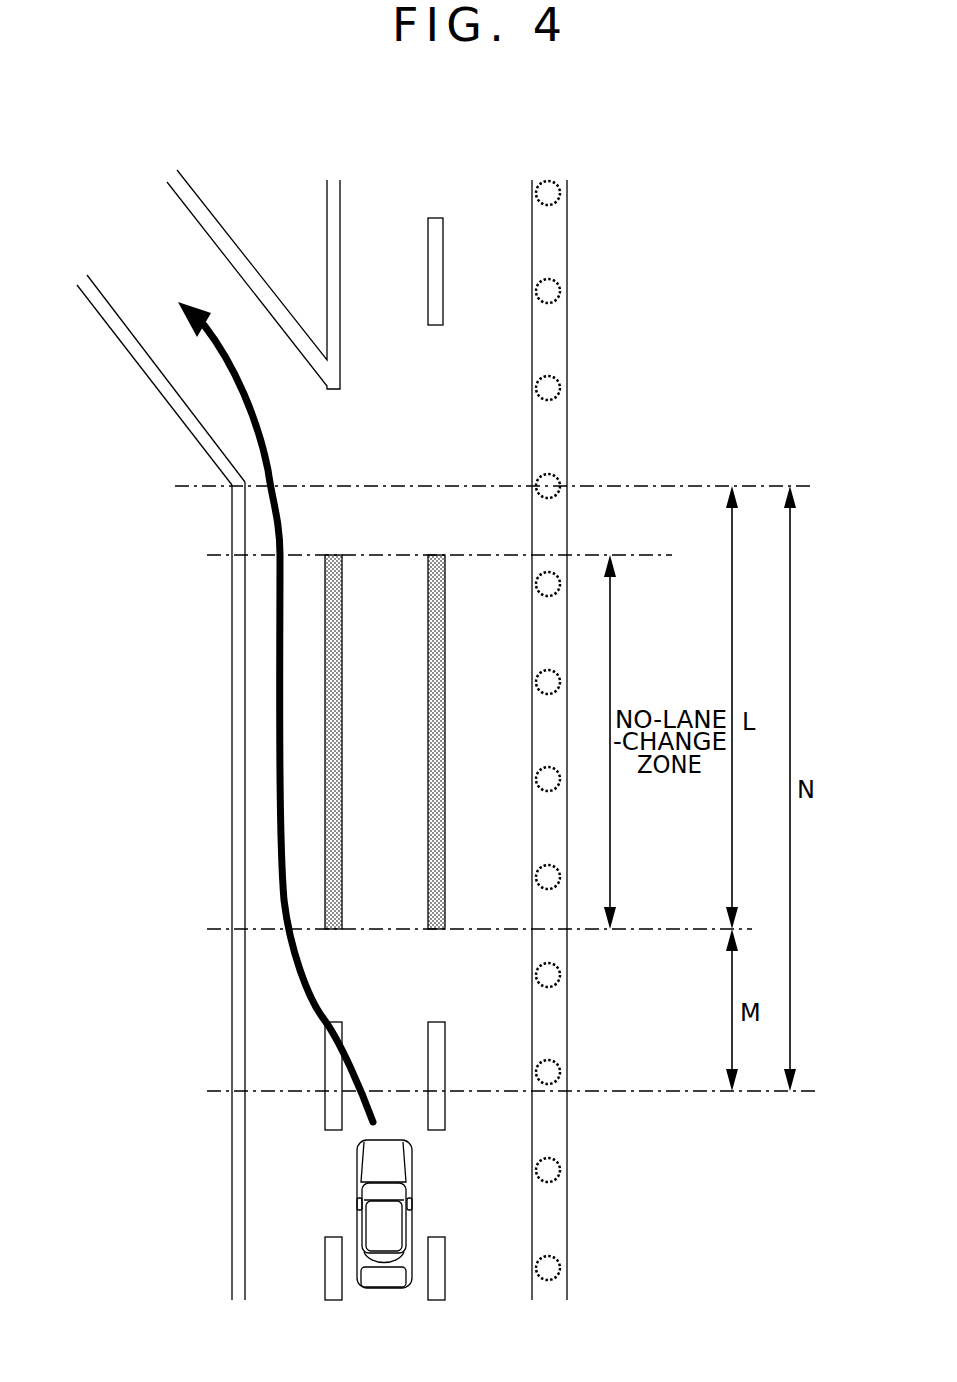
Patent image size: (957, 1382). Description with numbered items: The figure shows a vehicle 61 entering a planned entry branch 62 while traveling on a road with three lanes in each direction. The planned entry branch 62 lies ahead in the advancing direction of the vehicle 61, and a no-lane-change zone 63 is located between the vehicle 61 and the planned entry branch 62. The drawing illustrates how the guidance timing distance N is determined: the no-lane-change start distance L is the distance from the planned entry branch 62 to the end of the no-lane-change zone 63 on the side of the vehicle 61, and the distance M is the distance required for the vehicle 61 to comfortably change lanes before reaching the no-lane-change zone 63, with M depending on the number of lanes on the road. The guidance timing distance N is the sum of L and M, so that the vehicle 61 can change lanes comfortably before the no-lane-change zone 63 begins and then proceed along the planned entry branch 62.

The vehicle 61 is at (387, 1208).
The planned entry branch 62 is at (197, 370).
The no-lane-change zone 63 is at (401, 752).